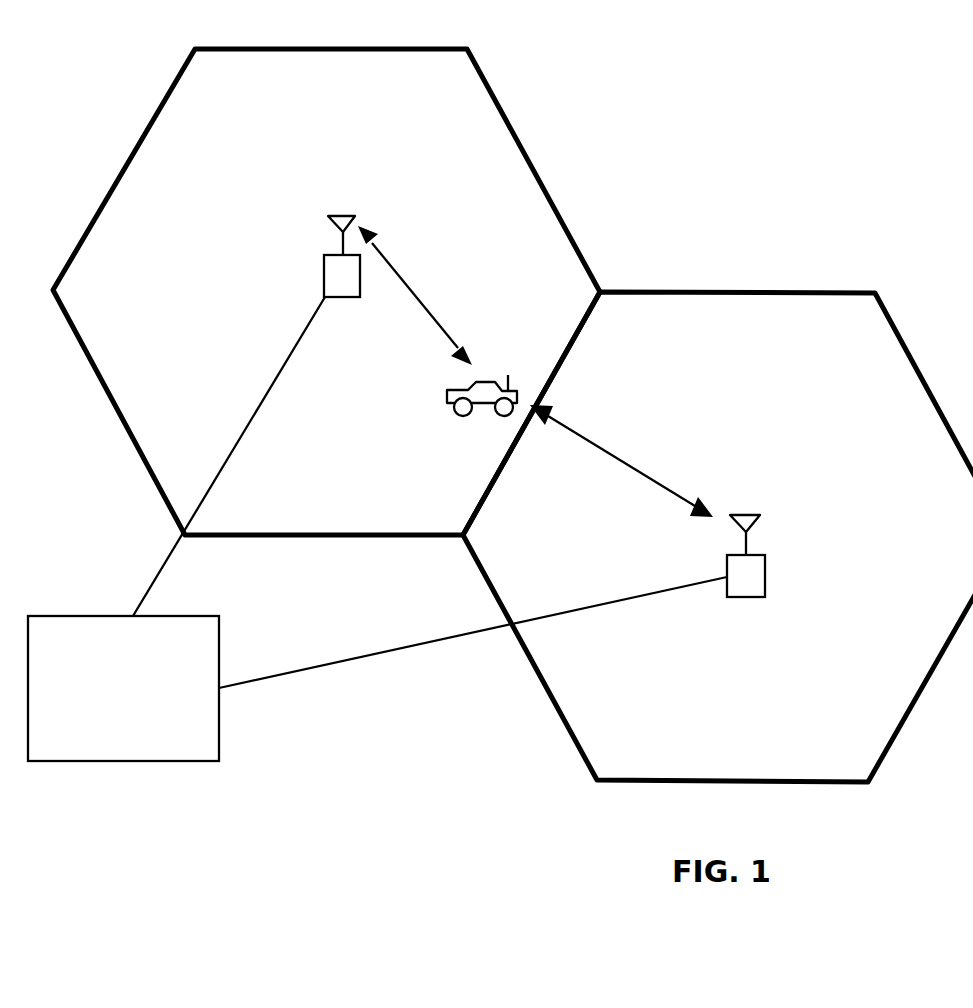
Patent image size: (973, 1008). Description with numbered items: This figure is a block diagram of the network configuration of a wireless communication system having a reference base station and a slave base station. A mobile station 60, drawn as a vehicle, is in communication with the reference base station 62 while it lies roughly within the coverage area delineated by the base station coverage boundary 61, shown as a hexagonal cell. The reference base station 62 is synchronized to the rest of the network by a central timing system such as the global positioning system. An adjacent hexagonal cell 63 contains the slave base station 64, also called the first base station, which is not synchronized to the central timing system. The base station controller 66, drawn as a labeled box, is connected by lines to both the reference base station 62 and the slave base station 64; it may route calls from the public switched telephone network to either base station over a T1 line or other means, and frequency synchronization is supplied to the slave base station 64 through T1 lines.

The mobile station 60 is at (491, 372).
The base station coverage boundary 61 is at (520, 138).
The reference base station 62 is at (342, 297).
The second cell 63 is at (738, 292).
The slave base station 64 is at (765, 578).
The base station controller 66 is at (175, 615).